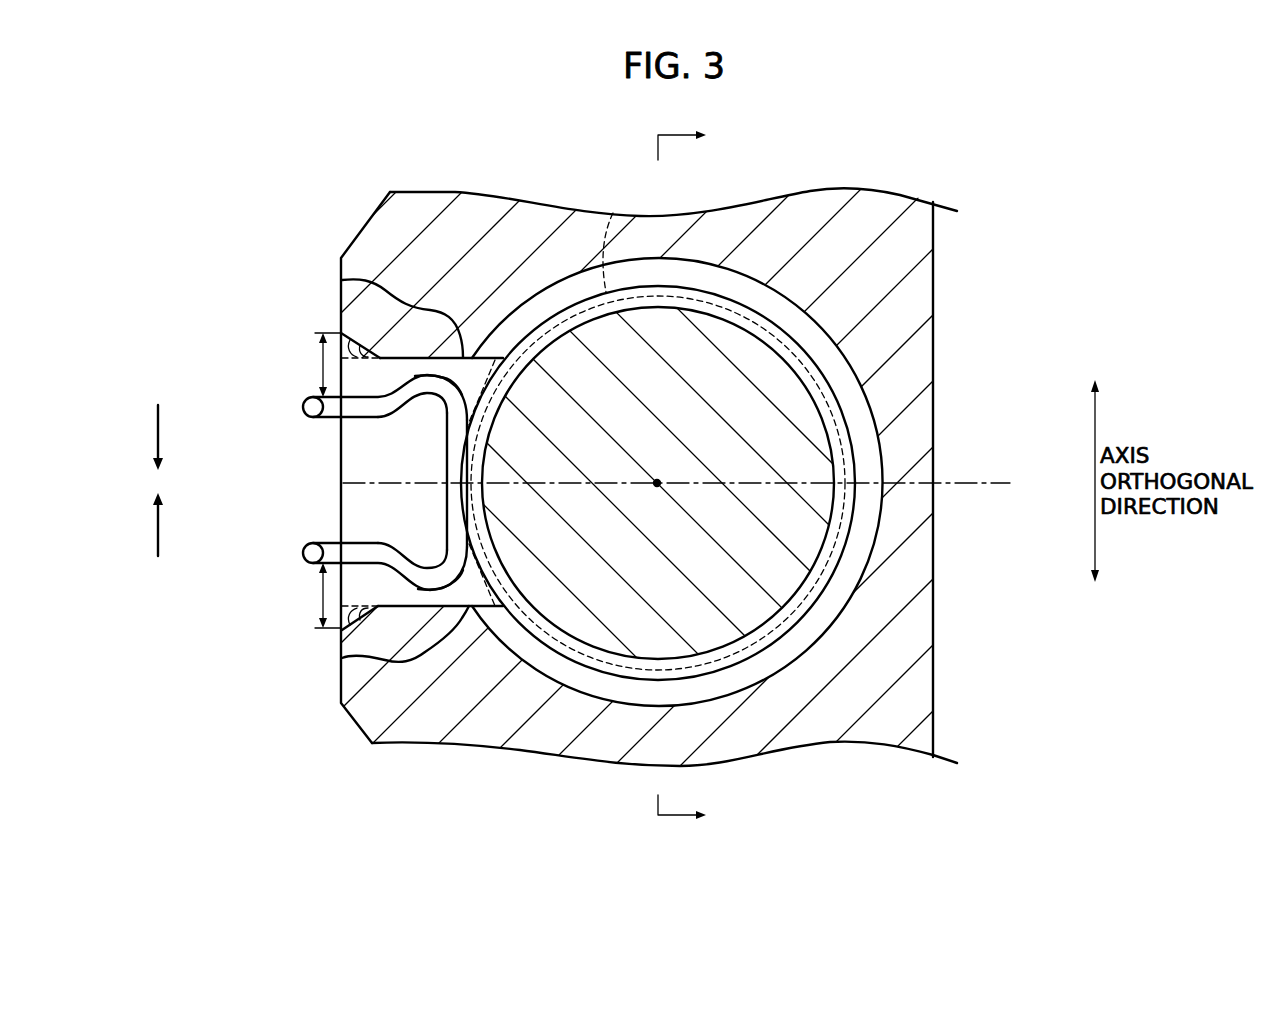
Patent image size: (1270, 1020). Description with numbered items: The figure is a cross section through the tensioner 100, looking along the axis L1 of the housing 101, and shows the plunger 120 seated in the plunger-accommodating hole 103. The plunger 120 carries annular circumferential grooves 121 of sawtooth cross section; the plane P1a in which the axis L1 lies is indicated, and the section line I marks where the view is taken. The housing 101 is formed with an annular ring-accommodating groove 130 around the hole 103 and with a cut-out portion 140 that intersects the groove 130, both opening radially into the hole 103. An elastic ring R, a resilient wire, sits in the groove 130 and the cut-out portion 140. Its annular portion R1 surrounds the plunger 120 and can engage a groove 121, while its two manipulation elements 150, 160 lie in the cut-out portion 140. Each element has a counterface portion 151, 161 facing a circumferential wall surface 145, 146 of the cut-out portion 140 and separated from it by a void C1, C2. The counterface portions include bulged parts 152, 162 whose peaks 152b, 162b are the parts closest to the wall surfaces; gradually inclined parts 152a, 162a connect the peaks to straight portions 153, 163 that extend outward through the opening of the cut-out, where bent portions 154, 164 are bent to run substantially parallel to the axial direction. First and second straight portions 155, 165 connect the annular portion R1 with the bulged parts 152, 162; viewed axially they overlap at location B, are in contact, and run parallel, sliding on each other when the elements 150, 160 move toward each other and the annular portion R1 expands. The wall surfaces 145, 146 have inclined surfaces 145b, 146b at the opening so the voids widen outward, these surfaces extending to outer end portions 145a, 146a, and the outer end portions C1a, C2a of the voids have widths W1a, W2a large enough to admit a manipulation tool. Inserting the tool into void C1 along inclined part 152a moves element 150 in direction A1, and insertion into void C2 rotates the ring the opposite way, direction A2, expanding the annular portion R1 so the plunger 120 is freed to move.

The tensioner 100 is at (1038, 193).
The housing 101 is at (822, 712).
The plunger-accommodating hole 103 is at (709, 668).
The plunger 120 is at (805, 540).
The annular circumferential grooves 121 is at (655, 306).
The ring-accommodating groove 130 is at (742, 292).
The cut-out portion 140 is at (350, 468).
The wall surface 145 is at (470, 600).
The outer end portion 145a is at (342, 631).
The inclined surface 145b is at (363, 677).
The wall surface 146 is at (470, 368).
The outer end portion 146a is at (343, 334).
The inclined surface 146b is at (374, 352).
The manipulation element 150 is at (283, 560).
The counterface portion 151 is at (325, 527).
The bulged part 152 is at (413, 561).
The inclined portion 152a is at (428, 592).
The peak 152b is at (443, 590).
The straight portion 153 is at (360, 549).
The bent portion 154 is at (303, 553).
The first straight portion 155 is at (457, 465).
The manipulation element 160 is at (283, 396).
The counterface portion 161 is at (325, 432).
The bulged part 162 is at (412, 421).
The inclined portion 162a is at (428, 372).
The peak 162b is at (443, 377).
The straight portion 163 is at (360, 417).
The bent portion 164 is at (303, 406).
The second straight portion 165 is at (445, 421).
The direction A1 is at (155, 523).
The second direction A2 is at (155, 433).
The location B is at (478, 498).
The void C1 is at (372, 612).
The outer end portion C1a is at (352, 659).
The void C2 is at (388, 356).
The outer end portion C2a is at (358, 350).
The axial line L1 is at (657, 481).
The plane P1a is at (1003, 481).
The elastic ring R is at (591, 704).
The annular portion R1 is at (848, 406).
The width W1a is at (322, 595).
The width W2a is at (324, 365).
The section line I is at (689, 476).